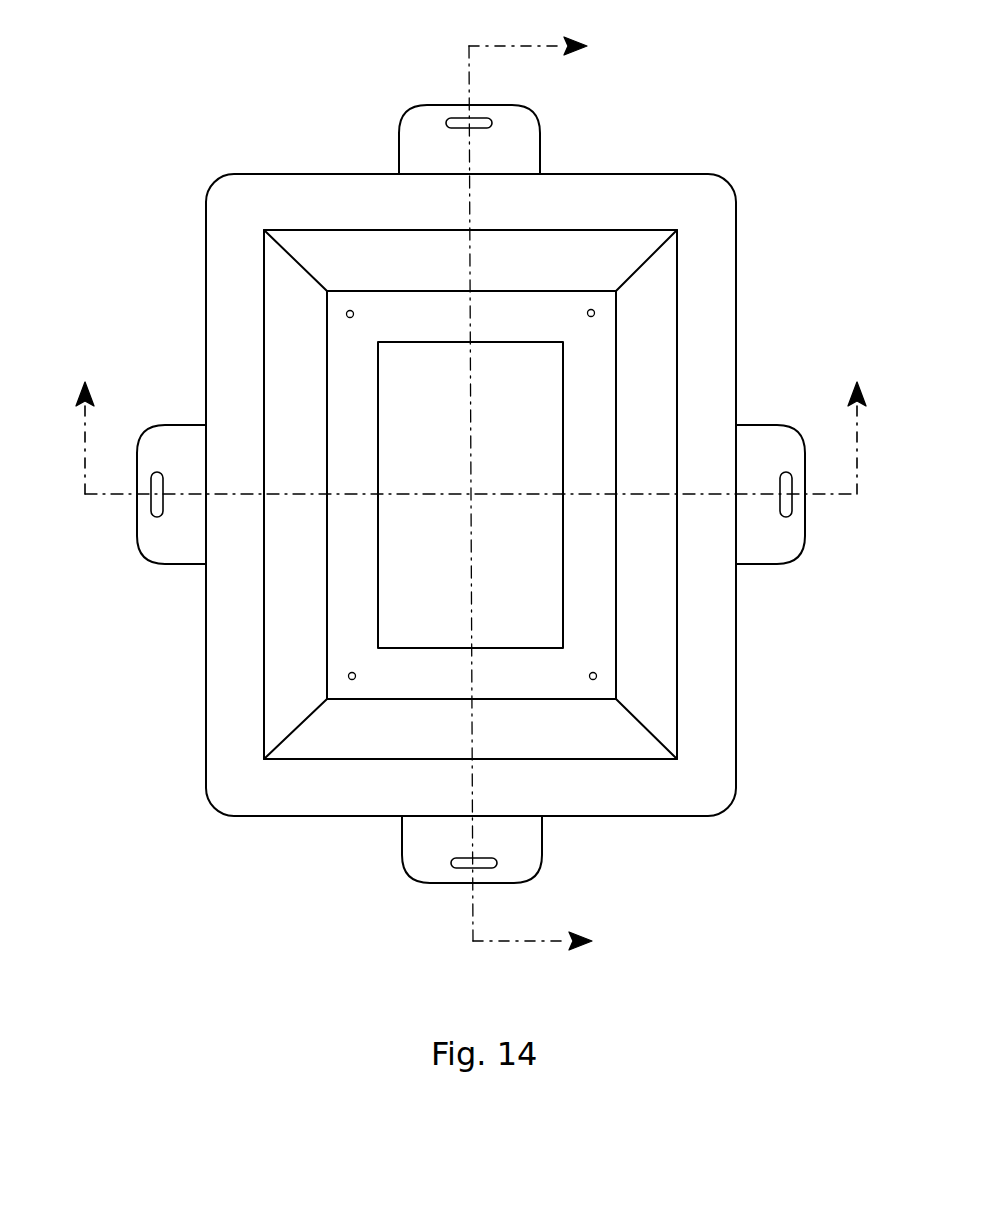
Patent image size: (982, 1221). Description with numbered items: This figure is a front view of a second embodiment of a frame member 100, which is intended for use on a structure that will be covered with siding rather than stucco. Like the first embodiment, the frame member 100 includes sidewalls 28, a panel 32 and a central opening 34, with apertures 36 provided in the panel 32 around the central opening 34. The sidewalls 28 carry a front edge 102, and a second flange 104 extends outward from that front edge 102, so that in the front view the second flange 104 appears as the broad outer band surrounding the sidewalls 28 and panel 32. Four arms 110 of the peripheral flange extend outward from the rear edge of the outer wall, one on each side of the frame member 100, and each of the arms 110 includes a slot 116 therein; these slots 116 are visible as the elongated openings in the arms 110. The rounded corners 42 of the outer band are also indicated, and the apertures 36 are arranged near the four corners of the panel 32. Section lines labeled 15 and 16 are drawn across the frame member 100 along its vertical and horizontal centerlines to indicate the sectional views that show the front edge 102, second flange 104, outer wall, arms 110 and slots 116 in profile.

The frame member 100 is at (140, 274).
The section line 15- 15 is at (530, 497).
The section line 16- 16 is at (475, 438).
The corners 42 is at (722, 812).
The second flange 104 is at (718, 281).
The arms 110 is at (449, 157).
The slot 116 is at (492, 123).
The front edge 102 is at (676, 335).
The sidewalls 28 is at (399, 276).
The panel 32 is at (605, 467).
The central opening 34 is at (519, 441).
The apertures 36 is at (353, 316).